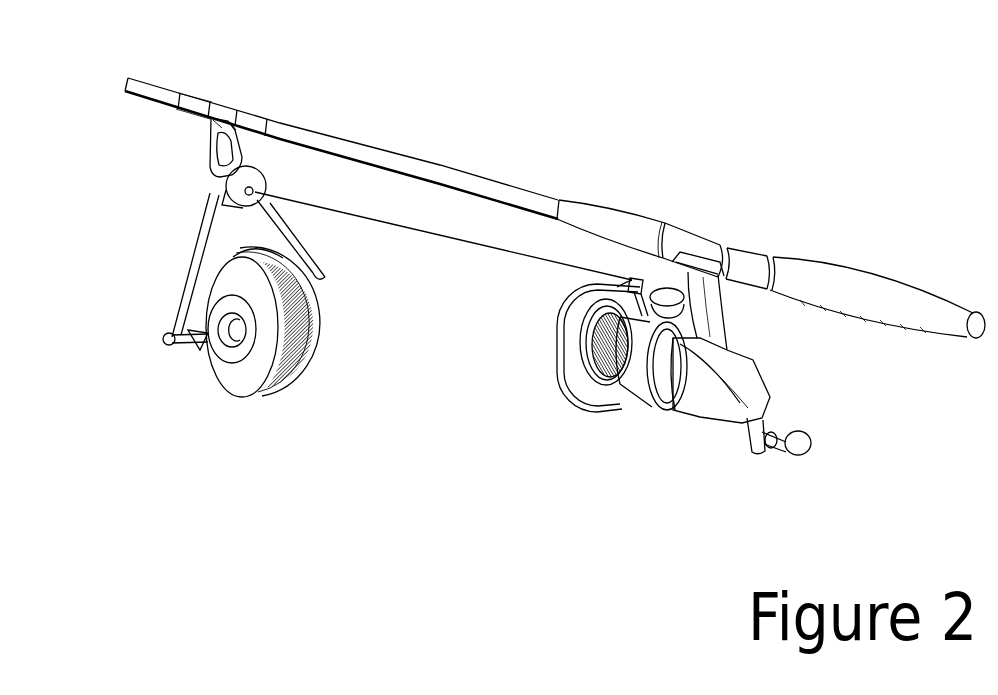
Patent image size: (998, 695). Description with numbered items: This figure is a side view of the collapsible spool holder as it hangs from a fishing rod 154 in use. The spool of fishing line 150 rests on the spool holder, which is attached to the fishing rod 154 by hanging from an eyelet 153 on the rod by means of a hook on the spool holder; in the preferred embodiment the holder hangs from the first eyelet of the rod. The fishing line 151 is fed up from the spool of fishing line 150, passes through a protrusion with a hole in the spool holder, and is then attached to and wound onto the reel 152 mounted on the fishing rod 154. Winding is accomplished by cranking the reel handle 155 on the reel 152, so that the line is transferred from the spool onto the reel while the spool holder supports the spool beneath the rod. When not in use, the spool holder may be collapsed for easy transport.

The spool of fishing line 150 is at (237, 373).
The fishing line 151 is at (402, 228).
The reel 152 is at (686, 377).
The eyelet 153 is at (210, 157).
The fishing rod 154 is at (462, 183).
The reel handle 155 is at (802, 432).